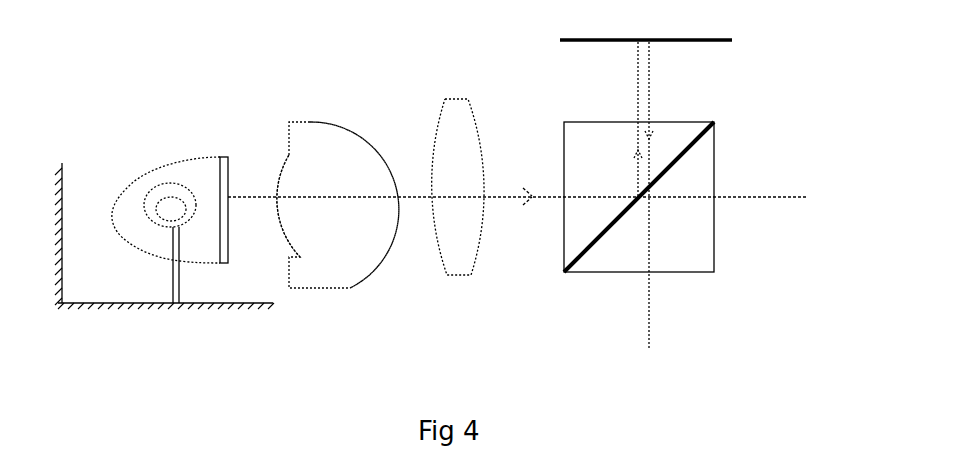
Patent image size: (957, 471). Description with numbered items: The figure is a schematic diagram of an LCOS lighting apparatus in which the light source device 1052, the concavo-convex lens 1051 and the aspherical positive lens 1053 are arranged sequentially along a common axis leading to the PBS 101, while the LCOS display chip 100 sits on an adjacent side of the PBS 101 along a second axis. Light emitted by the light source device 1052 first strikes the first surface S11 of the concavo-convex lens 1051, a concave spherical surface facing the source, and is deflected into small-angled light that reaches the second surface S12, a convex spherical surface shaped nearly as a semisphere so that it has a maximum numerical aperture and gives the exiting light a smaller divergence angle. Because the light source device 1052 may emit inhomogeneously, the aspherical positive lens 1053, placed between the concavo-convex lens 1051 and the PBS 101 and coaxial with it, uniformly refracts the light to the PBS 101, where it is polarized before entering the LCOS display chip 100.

The LCOS display chip 100 is at (590, 39).
The PBS 101 is at (716, 122).
The concavo-convex lens 1051 is at (307, 122).
The light source device 1052 is at (188, 159).
The aspherical positive lens 1053 is at (458, 99).
The first surface S11 is at (307, 243).
The second surface S12 is at (353, 283).